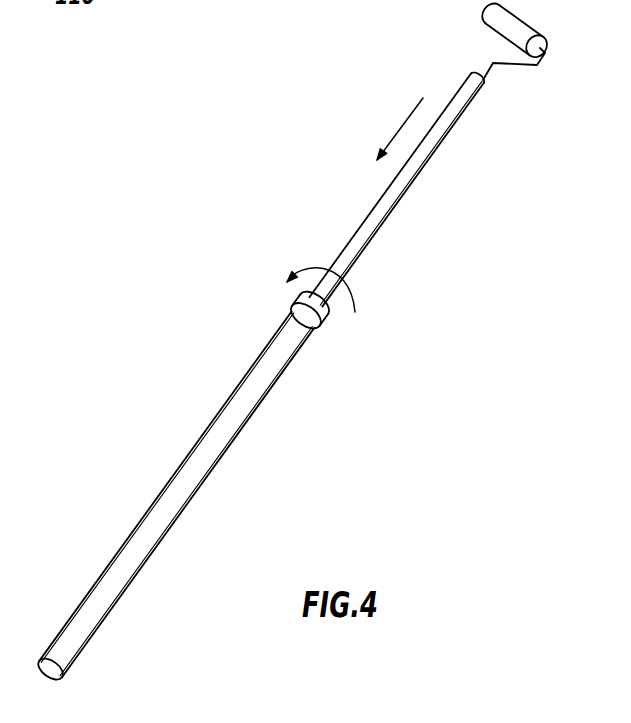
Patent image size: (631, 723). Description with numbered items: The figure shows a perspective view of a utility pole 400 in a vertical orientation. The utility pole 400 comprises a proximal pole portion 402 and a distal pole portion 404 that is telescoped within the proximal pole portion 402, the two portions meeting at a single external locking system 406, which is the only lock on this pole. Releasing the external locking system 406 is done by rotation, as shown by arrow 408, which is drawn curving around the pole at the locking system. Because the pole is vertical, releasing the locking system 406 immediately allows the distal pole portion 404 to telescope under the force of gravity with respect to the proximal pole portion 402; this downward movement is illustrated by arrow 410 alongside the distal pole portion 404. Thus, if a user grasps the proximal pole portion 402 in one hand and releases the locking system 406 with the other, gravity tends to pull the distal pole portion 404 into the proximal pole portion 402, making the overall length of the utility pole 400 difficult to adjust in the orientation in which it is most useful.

The utility pole 400 is at (107, 208).
The proximal pole portion 402 is at (253, 418).
The distal pole portion 404 is at (407, 178).
The external locking system 406 is at (328, 325).
The arrow 408 is at (318, 273).
The arrow 410 is at (403, 125).